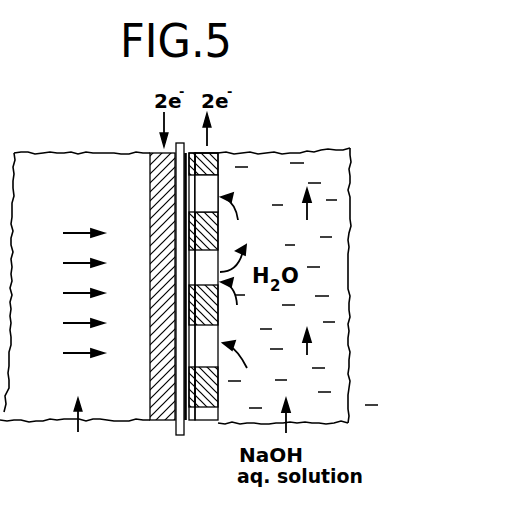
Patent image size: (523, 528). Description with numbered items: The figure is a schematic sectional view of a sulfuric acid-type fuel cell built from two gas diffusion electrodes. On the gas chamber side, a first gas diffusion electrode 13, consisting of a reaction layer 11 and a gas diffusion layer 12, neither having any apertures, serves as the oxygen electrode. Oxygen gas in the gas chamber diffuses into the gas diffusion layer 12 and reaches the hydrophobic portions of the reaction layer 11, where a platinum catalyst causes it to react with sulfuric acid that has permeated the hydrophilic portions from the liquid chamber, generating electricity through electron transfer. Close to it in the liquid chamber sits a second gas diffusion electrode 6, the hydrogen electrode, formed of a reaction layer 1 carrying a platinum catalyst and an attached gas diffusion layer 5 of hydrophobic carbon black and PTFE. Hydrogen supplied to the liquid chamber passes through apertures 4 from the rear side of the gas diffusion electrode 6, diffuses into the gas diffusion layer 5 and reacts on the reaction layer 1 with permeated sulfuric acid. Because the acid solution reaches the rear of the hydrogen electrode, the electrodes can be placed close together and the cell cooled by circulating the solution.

The reaction layer 1 is at (234, 267).
The apertures 4 is at (221, 180).
The gas diffusion layer 5 is at (221, 232).
The gas diffusion electrode 6 is at (226, 145).
The reaction layer 11 is at (181, 437).
The gas diffusion layer 12 is at (150, 330).
The first gas diffusion electrode 13 is at (144, 163).